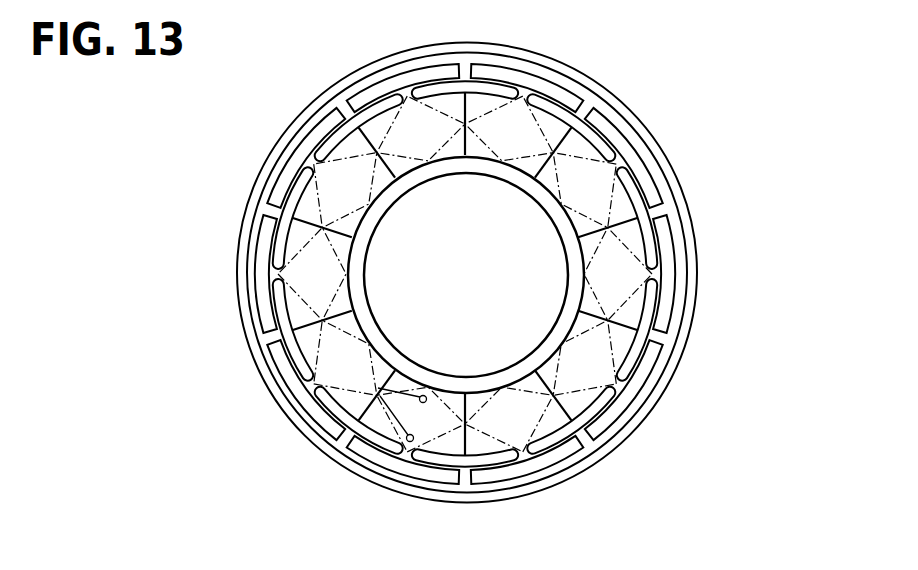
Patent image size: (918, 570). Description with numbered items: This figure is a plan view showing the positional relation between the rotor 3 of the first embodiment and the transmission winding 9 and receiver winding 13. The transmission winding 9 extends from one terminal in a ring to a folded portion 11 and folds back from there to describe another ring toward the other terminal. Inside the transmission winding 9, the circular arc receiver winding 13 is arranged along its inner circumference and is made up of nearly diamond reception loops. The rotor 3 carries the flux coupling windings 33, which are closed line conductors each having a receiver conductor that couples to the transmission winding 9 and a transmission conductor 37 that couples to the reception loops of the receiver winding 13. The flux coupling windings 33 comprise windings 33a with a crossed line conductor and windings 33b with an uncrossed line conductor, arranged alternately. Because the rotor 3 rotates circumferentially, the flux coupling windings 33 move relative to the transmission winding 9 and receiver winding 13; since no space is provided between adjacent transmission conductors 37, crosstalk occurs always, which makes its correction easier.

The rotor 3 is at (732, 56).
The transmission winding 9 is at (262, 346).
The folded portion 11 is at (668, 326).
The receiver winding 13 is at (618, 186).
The flux coupling windings 33 is at (532, 273).
The flux coupling winding with a line conductor crossed 33a is at (633, 272).
The flux coupling winding with a line conductor not crossed 33b is at (603, 371).
The transmission conductor 37 is at (578, 281).